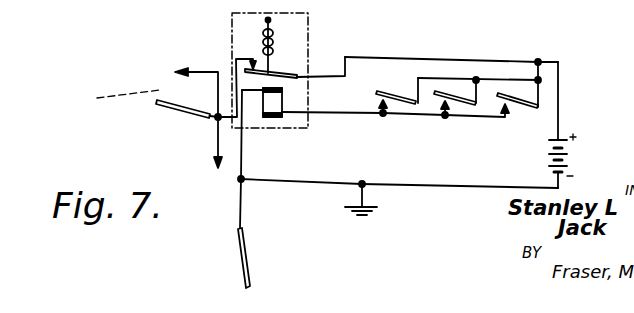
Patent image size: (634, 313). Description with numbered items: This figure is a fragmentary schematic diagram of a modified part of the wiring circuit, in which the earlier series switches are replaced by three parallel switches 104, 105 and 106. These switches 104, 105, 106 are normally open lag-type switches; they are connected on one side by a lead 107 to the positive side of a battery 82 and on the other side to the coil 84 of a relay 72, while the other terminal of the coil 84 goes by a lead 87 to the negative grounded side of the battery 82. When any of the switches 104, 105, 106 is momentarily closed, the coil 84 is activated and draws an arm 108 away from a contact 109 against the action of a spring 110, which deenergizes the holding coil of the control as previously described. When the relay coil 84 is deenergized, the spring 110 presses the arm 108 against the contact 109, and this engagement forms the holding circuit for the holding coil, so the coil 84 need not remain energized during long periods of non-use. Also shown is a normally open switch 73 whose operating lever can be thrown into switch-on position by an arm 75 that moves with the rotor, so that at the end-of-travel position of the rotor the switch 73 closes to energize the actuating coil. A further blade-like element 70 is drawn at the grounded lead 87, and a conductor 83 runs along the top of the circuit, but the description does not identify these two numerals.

The contact blade 70 is at (250, 265).
The relay 72 is at (300, 128).
The normally open switch 73 is at (167, 106).
The arm 75 is at (165, 90).
The battery 82 is at (570, 157).
The conductor 83 is at (472, 58).
The coil 84 is at (272, 120).
The lead 87 is at (238, 168).
The parallel switch 104 is at (407, 102).
The parallel switch 105 is at (462, 105).
The parallel switch 106 is at (522, 105).
The lead 107 is at (565, 95).
The arm 108 is at (285, 70).
The contact 109 is at (250, 66).
The spring 110 is at (272, 37).